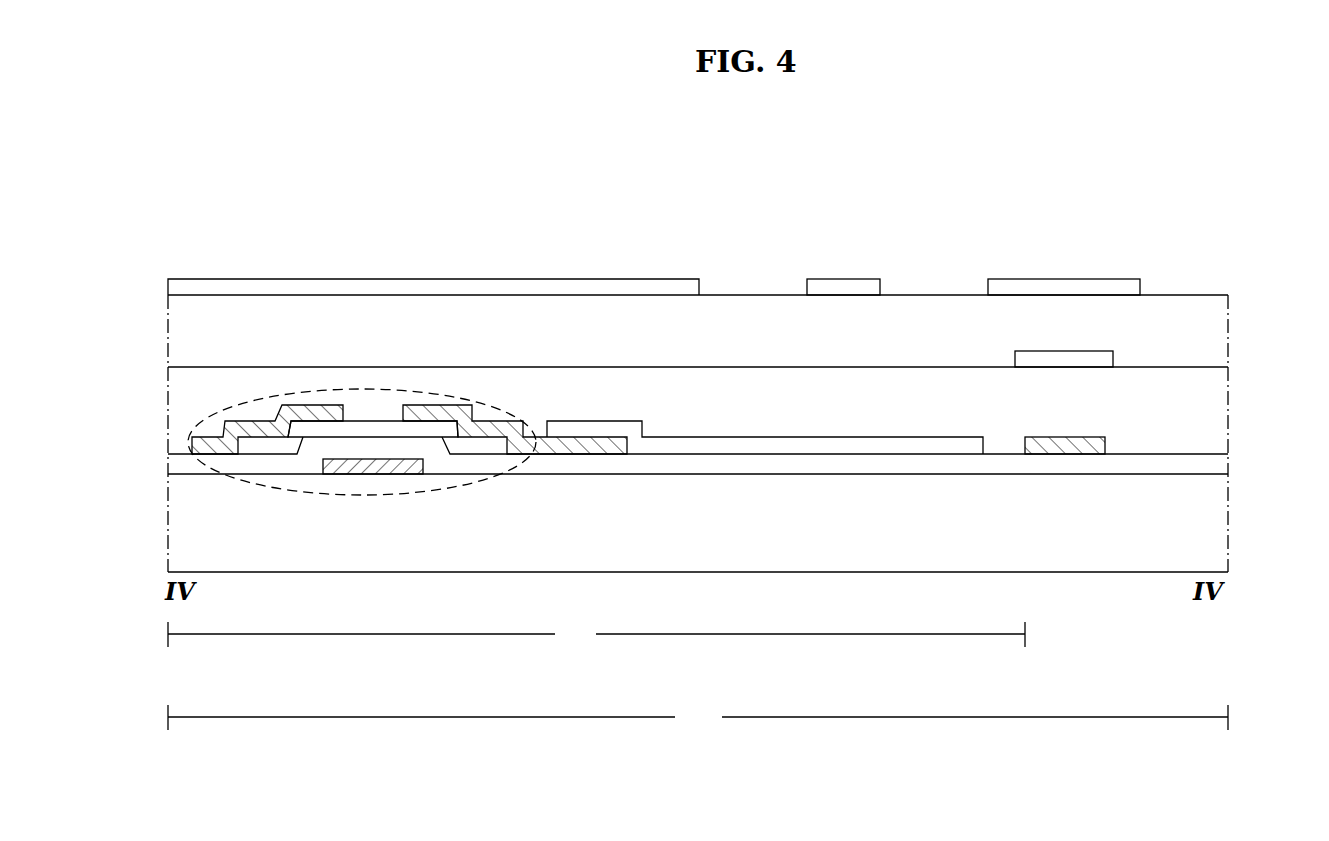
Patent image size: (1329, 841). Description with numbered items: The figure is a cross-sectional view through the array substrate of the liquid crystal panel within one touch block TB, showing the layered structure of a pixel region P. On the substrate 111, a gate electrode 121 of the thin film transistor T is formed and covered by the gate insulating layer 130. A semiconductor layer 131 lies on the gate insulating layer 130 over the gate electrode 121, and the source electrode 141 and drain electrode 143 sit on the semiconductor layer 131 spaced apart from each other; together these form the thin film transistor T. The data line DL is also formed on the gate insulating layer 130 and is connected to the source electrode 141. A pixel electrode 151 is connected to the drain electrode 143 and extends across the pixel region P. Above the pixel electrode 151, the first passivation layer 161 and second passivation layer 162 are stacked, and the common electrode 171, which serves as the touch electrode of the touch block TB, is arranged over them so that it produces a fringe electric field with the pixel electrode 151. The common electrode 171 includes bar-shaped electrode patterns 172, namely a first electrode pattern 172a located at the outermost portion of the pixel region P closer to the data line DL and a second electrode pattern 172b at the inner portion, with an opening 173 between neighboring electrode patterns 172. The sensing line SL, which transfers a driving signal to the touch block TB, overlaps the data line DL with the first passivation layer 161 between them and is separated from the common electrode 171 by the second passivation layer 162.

The substrate 111 is at (1213, 535).
The gate electrode 121 is at (370, 468).
The gate insulating layer 130 is at (1213, 465).
The semiconductor layer 131 is at (312, 430).
The source electrode 141 is at (307, 406).
The drain electrode 143 is at (422, 410).
The pixel electrode 151 is at (802, 445).
The first passivation layer 161 is at (1213, 418).
The second passivation layer 162 is at (1213, 338).
The common electrode 171 is at (356, 286).
The electrode patterns 172 is at (973, 215).
The first electrode pattern 172a is at (1064, 248).
The second electrode pattern 172b is at (849, 284).
The opening 173 is at (752, 272).
The thin film transistor T is at (448, 488).
The data line DL is at (1058, 447).
The sensing line SL is at (1067, 360).
The pixel region P is at (596, 636).
The touch block TB is at (698, 719).